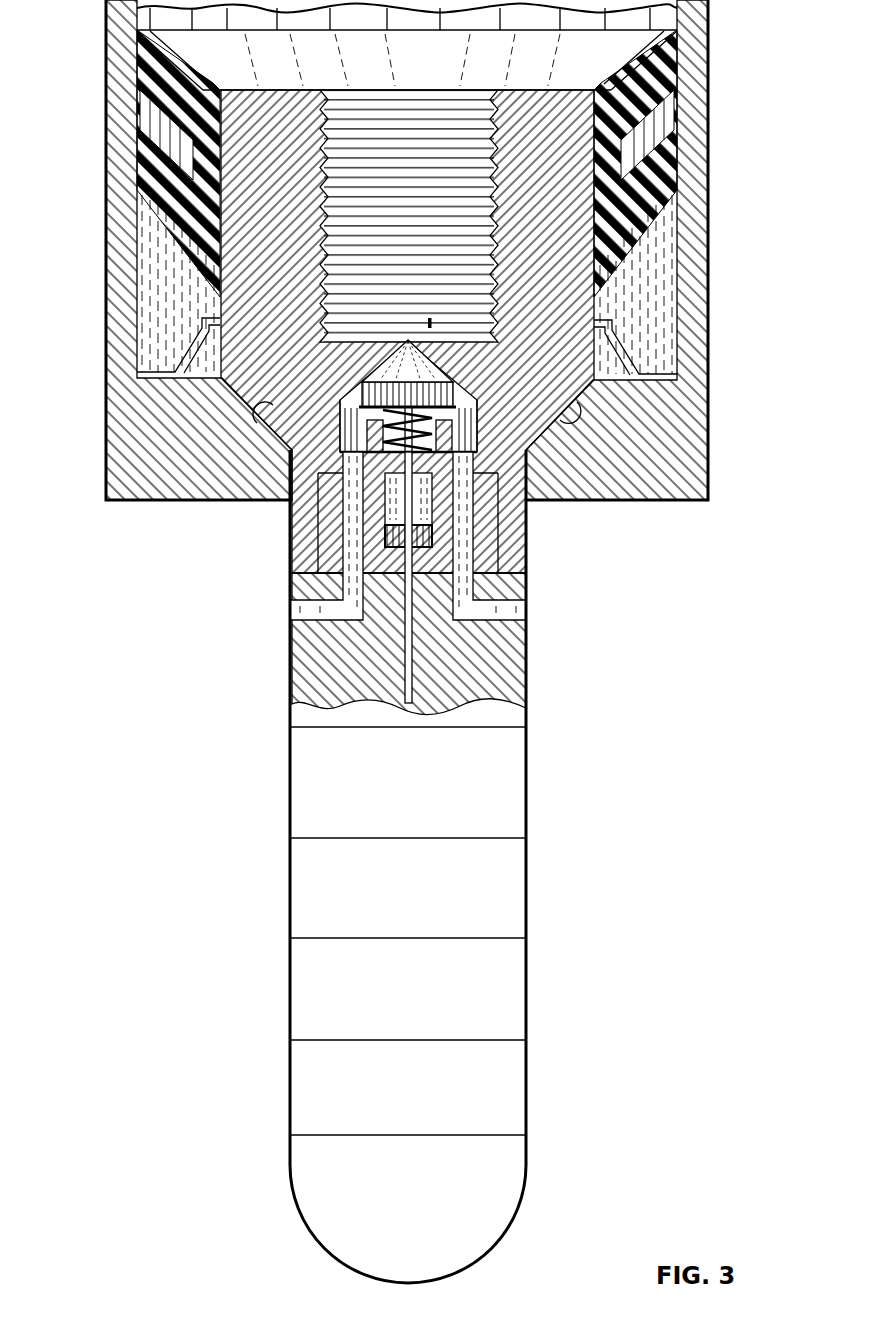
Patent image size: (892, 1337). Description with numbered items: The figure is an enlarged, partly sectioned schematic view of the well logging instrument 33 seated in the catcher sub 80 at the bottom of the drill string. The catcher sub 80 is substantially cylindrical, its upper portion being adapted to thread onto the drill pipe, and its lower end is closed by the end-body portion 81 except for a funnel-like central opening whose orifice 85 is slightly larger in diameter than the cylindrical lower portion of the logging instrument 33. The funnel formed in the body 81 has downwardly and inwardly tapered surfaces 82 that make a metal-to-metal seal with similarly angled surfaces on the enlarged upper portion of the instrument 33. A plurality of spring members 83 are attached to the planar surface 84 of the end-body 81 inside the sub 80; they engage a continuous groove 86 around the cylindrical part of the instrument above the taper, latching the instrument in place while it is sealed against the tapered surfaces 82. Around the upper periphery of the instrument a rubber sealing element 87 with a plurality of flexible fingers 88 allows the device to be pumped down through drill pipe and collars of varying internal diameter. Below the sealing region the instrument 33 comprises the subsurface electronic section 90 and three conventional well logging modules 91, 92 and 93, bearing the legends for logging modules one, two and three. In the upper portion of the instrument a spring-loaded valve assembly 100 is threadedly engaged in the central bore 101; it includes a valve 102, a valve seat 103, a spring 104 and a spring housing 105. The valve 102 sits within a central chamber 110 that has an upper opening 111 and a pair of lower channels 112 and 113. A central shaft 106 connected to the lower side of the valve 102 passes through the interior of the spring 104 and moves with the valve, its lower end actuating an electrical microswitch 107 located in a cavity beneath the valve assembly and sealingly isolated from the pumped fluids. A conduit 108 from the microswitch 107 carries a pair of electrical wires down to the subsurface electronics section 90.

The logging instrument 33 is at (547, 770).
The catcher sub 80 is at (727, 140).
The end-body portion 81 is at (673, 467).
The tapered surfaces 82 is at (268, 420).
The spring members 83 is at (183, 360).
The planar surface 84 is at (205, 372).
The orifice 85 is at (298, 492).
The continuous groove 86 is at (213, 322).
The rubber sealing element 87 is at (627, 282).
The flexible fingers 88 is at (683, 92).
The subsurface electronic section 90 is at (526, 838).
The well logging module no. 1 91 is at (526, 938).
The well logging module no. 2 92 is at (526, 1040).
The well logging module no. 3 93 is at (526, 1135).
The spring-loaded valve assembly 100 is at (427, 350).
The central bore 101 is at (463, 118).
The valve 102 is at (403, 380).
The valve seat 103 is at (375, 422).
The spring 104 is at (432, 382).
The spring housing 105 is at (341, 398).
The central shaft 106 is at (420, 495).
The electrical microswitch 107 is at (430, 540).
The conduit 108 is at (468, 712).
The central chamber 110 is at (456, 412).
The upper opening 111 is at (432, 318).
The lower channel 112 is at (290, 612).
The lower channel 113 is at (526, 615).